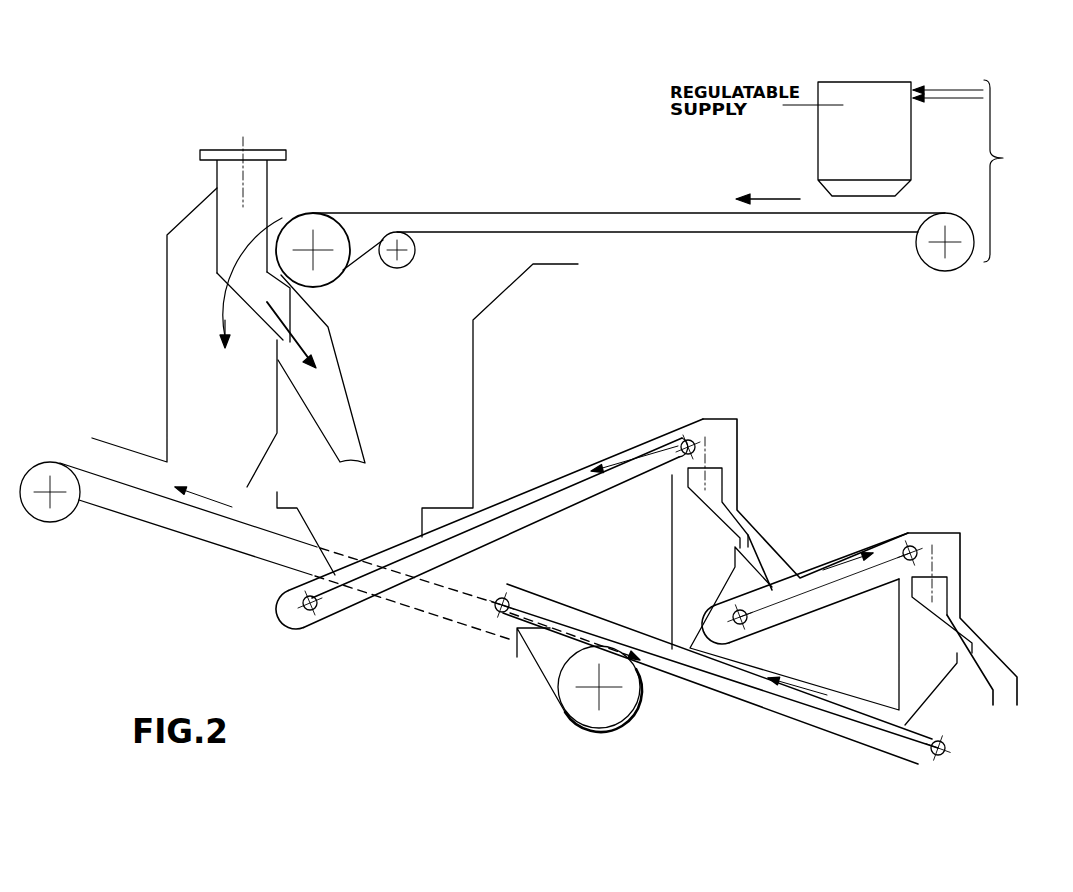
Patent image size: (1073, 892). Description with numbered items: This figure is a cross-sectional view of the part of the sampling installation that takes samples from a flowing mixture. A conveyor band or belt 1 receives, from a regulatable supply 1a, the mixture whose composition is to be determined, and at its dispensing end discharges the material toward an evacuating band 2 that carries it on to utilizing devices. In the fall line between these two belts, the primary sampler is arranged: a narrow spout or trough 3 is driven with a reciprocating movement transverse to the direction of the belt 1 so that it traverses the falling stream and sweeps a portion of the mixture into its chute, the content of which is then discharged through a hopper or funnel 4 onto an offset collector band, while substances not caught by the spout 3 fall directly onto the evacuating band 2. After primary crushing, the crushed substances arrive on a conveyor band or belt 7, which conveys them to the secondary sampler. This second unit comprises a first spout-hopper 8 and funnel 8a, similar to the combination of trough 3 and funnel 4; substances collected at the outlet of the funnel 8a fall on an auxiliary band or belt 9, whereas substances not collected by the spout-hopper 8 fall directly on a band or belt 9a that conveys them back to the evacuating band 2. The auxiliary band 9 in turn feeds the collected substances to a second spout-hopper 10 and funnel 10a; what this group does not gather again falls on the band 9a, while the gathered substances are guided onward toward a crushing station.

The conveyor band or belt 1 is at (657, 223).
The regulatable supply 1a is at (818, 140).
The evacuating band 2 is at (147, 507).
The spout or trough 3 is at (230, 187).
The hopper or funnel 4 is at (340, 437).
The conveyor band or belt 7 is at (515, 515).
The first spout-hopper 8 is at (718, 485).
The funnel 8a is at (768, 547).
The auxiliary band or belt 9 is at (805, 592).
The band or belt 9a is at (813, 705).
The second spout-hopper 10 is at (935, 587).
The funnel 10a is at (988, 652).